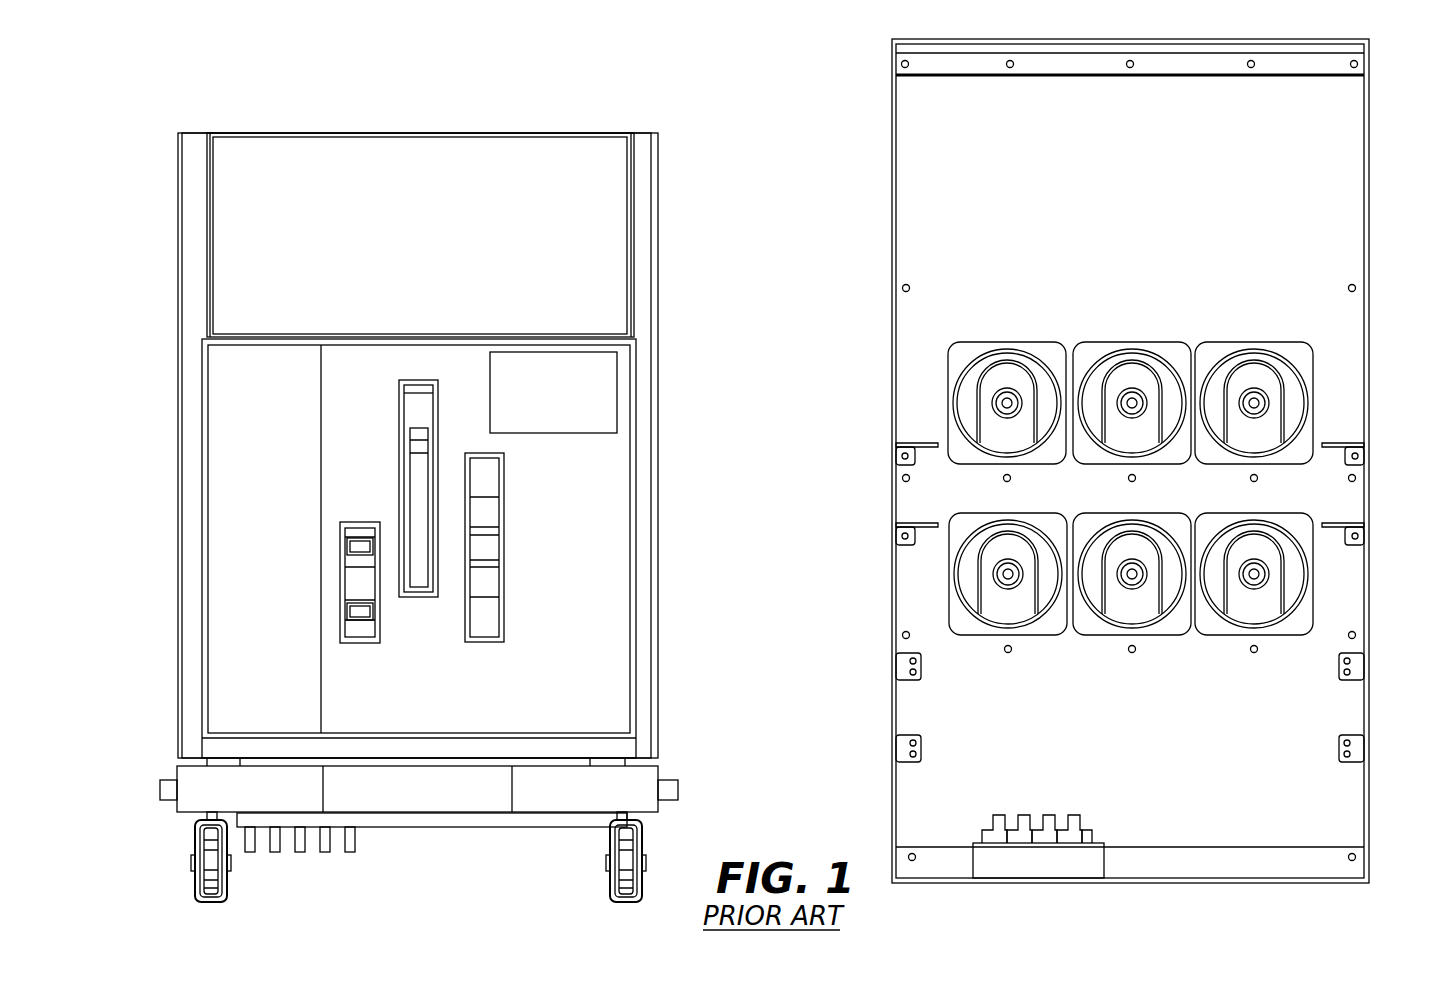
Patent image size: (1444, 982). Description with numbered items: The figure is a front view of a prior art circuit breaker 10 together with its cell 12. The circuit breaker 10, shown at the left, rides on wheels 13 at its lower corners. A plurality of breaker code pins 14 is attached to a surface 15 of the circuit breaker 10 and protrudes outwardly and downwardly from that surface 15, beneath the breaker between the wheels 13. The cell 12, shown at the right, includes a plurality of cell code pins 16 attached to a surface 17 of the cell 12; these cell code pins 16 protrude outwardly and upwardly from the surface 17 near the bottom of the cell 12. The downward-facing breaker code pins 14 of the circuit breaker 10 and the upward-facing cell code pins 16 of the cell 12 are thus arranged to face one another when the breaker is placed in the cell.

The circuit breaker 10 is at (540, 160).
The cell 12 is at (1335, 107).
The wheels 13 is at (212, 850).
The breaker code pins 14 is at (355, 857).
The surface of the circuit breaker 15 is at (365, 825).
The cell code pins 16 is at (1092, 810).
The surface of the cell 17 is at (982, 858).